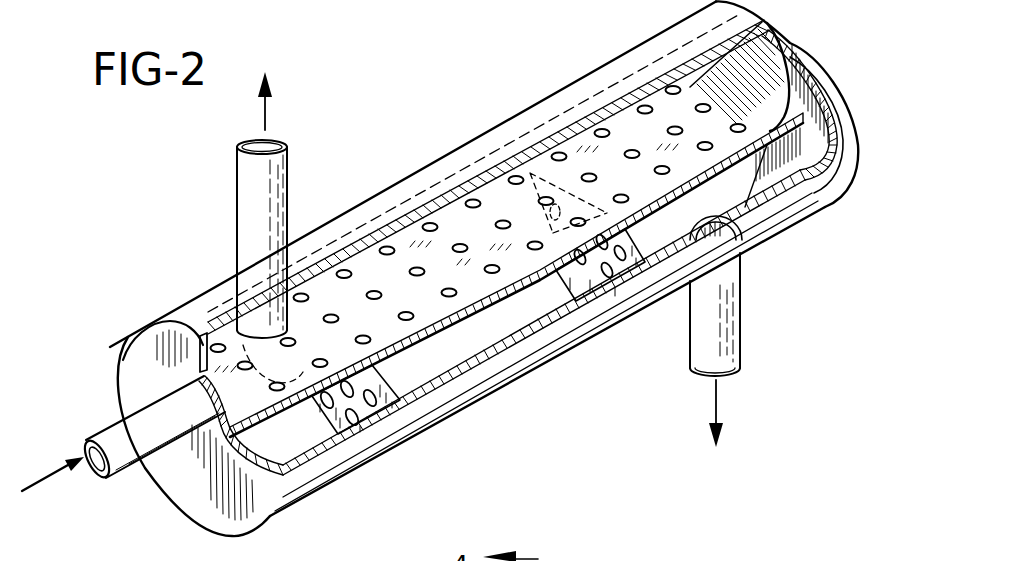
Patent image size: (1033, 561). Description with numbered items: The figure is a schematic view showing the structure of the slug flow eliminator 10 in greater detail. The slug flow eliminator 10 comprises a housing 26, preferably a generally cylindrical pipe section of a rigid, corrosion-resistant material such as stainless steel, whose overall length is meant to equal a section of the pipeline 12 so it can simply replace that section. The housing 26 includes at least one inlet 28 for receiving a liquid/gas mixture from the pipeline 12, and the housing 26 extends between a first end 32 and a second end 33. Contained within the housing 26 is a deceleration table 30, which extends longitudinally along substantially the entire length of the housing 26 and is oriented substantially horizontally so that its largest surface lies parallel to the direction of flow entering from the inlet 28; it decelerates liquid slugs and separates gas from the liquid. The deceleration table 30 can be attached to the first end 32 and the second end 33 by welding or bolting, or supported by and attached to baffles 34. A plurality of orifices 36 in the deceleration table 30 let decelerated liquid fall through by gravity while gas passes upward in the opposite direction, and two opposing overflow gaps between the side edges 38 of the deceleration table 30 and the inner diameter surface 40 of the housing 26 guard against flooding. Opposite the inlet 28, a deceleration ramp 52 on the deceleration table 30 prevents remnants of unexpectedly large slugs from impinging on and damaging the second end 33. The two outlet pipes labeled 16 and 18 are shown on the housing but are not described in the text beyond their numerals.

The slug flow eliminator 10 is at (379, 88).
The pipeline 12 is at (102, 408).
The first outlet tube 16 is at (247, 167).
The second outlet tube 18 is at (745, 328).
The housing 26 is at (565, 103).
The inlet 28 is at (160, 350).
The deceleration table 30 is at (500, 197).
The first end 32 is at (183, 490).
The second end 33 is at (812, 130).
The baffles 34 is at (330, 426).
The orifices 36 is at (416, 303).
The side edges 38 is at (399, 200).
The inner diameter surface 40 is at (838, 175).
The deceleration ramp 52 is at (778, 56).